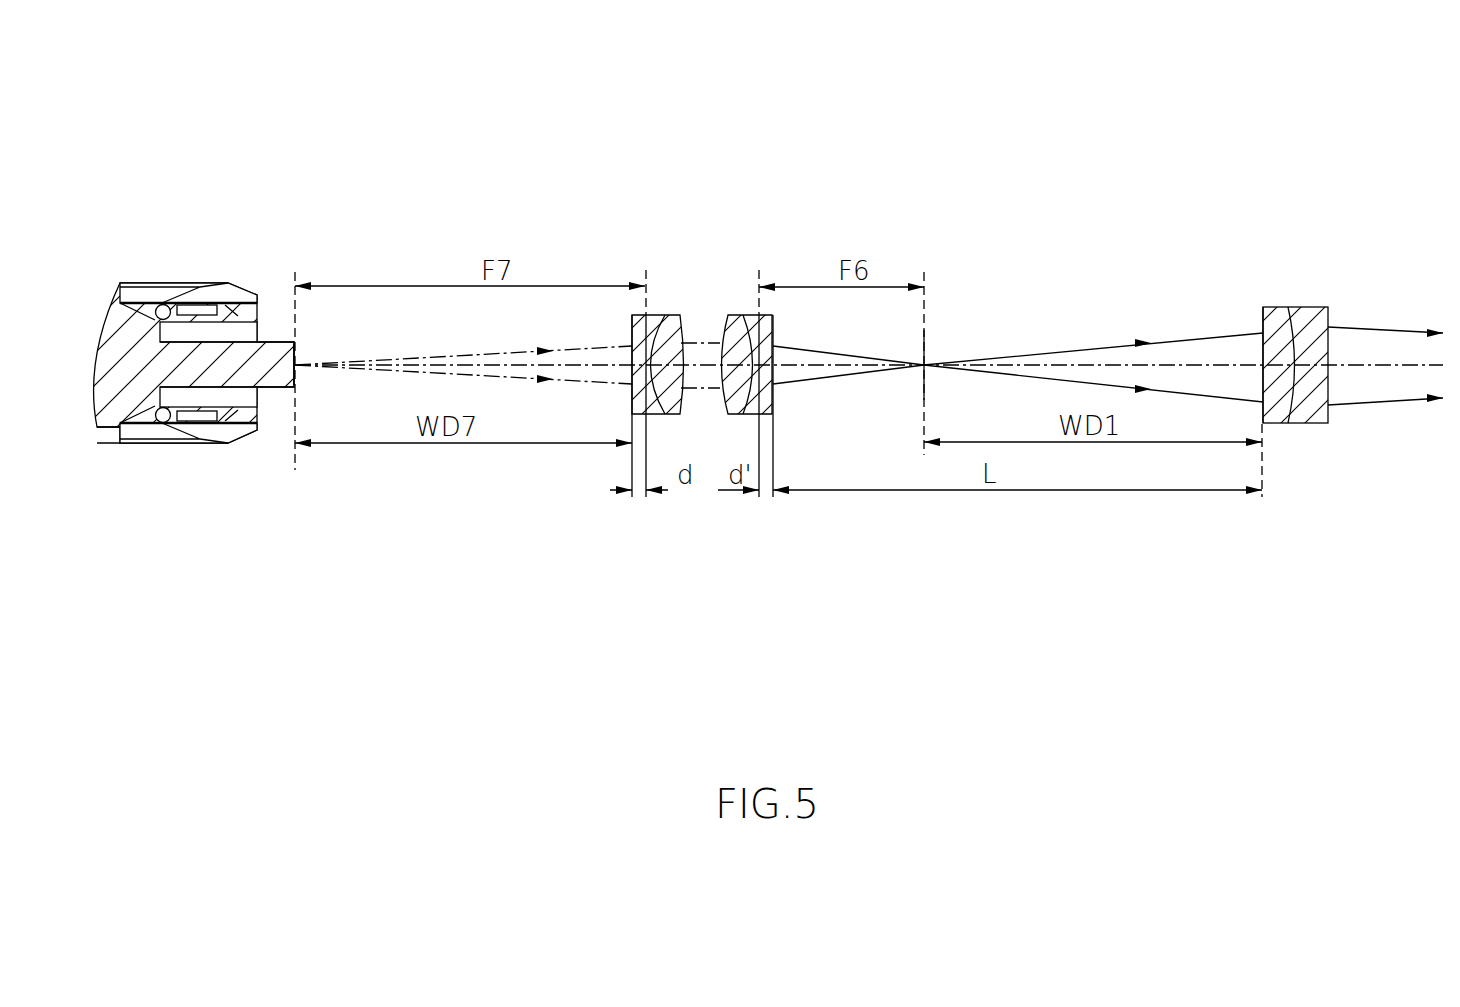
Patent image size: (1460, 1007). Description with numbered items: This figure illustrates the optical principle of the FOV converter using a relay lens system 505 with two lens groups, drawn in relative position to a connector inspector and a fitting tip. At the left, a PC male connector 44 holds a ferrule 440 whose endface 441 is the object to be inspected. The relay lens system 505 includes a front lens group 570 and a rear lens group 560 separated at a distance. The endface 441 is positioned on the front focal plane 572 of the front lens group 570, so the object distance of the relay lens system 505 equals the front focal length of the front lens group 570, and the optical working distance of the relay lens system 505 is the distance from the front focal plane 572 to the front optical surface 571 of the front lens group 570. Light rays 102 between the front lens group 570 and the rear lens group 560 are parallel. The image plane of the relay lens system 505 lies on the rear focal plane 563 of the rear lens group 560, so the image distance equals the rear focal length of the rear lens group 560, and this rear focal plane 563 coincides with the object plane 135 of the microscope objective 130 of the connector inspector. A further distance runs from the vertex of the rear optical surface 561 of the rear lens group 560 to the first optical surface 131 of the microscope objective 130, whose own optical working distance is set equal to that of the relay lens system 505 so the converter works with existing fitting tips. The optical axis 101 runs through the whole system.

The PC male connector 44 is at (153, 283).
The ferrule 440 is at (232, 388).
The endface 441 is at (296, 376).
The front focal plane 572 is at (296, 335).
The relay lens system 505 is at (760, 143).
The front lens group 570 is at (670, 317).
The front optical surface 571 is at (632, 387).
The light rays 102 is at (707, 387).
The rear lens group 560 is at (745, 317).
The rear optical surface 561 is at (776, 388).
The rear focal plane 563 is at (924, 272).
The object plane 135 is at (925, 336).
The microscope objective 130 is at (1303, 318).
The first optical surface 131 is at (1263, 334).
The optical axis 101 is at (1398, 365).